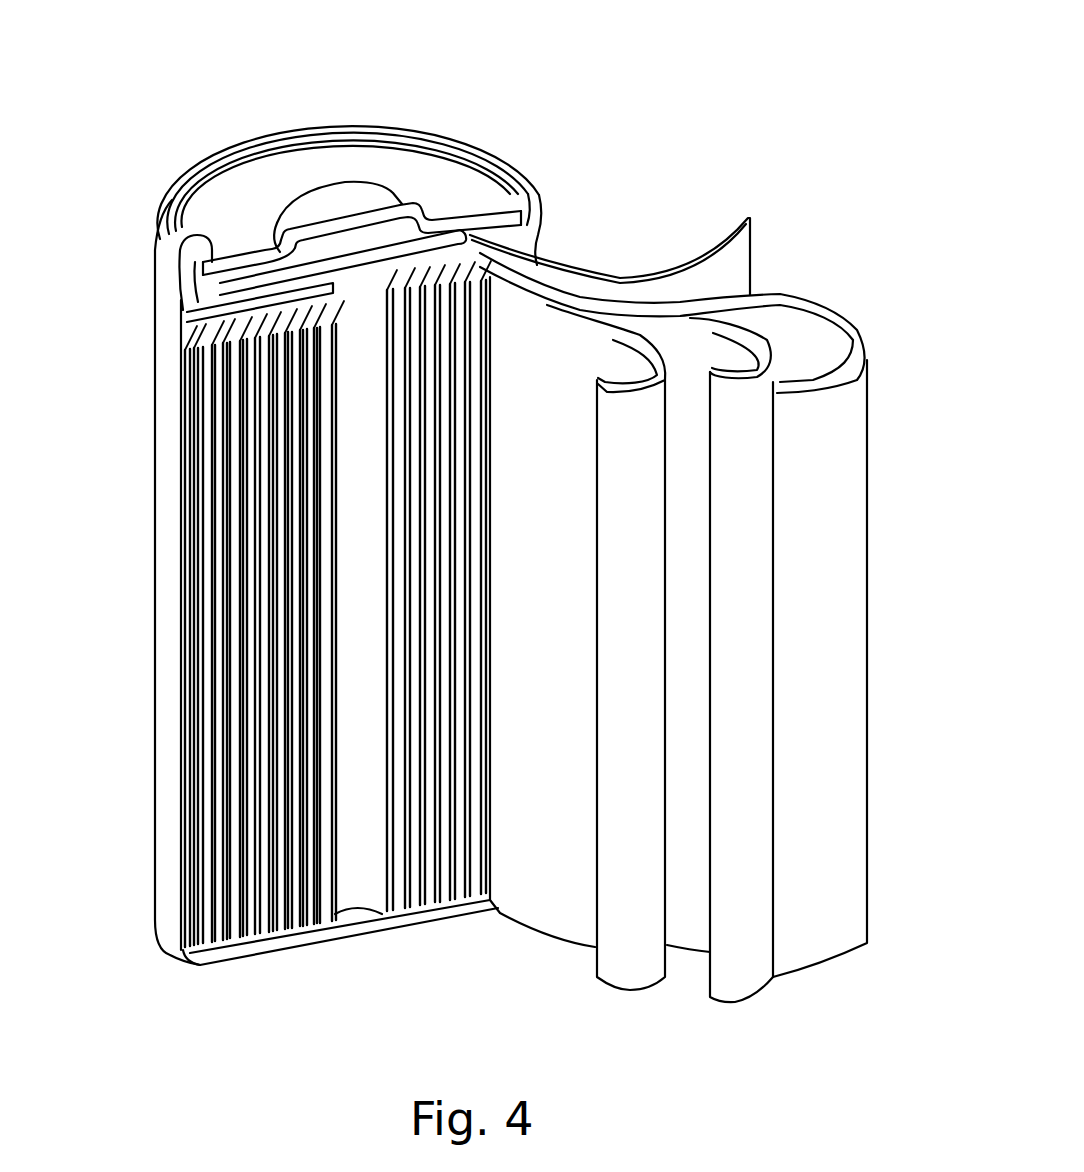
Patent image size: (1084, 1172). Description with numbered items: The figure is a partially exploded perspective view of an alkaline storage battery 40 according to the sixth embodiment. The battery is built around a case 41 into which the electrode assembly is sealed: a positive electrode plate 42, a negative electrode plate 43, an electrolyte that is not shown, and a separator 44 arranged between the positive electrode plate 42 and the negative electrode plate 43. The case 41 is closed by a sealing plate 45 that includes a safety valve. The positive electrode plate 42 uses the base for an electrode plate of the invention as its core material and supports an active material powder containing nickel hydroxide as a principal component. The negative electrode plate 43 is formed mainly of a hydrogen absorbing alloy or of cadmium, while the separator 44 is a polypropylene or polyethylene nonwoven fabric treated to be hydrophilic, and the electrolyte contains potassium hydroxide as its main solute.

The alkaline storage battery 40 is at (208, 136).
The case 41 is at (168, 697).
The positive electrode plate 42 is at (815, 535).
The negative electrode plate 43 is at (637, 943).
The separator 44 is at (745, 748).
The sealing plate 45 is at (355, 200).